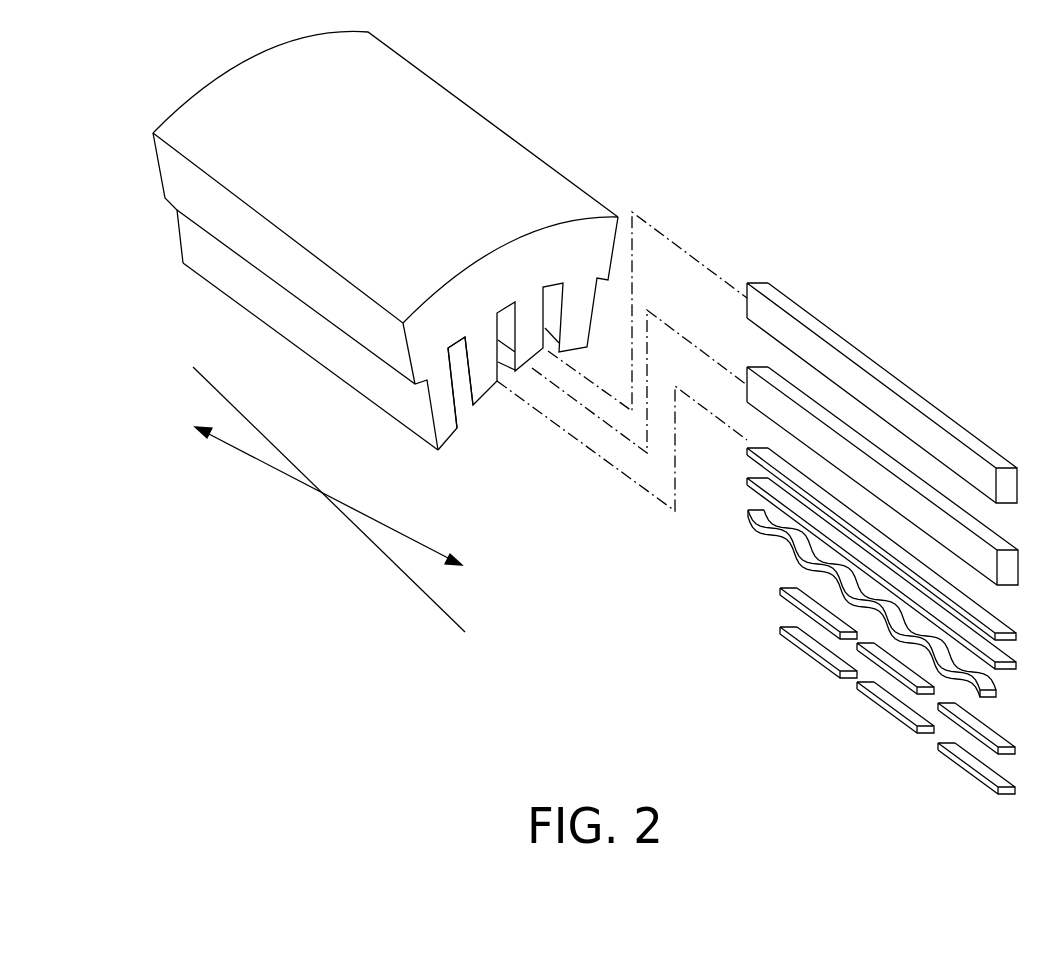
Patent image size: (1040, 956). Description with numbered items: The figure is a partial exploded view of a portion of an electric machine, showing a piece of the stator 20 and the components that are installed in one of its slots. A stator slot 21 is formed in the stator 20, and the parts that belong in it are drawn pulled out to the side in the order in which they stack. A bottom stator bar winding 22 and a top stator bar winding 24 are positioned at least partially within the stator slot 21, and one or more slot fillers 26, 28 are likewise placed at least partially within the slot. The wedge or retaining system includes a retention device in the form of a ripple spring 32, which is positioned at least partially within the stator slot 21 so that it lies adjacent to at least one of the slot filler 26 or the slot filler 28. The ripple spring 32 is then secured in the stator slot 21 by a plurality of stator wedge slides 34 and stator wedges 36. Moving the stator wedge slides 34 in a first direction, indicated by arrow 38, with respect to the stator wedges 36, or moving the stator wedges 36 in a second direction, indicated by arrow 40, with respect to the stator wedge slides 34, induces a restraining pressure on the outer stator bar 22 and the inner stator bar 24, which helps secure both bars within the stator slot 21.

The stator 20 is at (498, 103).
The stator slot 21 is at (458, 393).
The bottom stator bar winding 22 is at (770, 298).
The top stator bar winding 24 is at (767, 368).
The slot filler 26 is at (768, 446).
The slot filler 28 is at (767, 480).
The ripple spring 32 is at (758, 520).
The stator wedge slide 34 is at (798, 590).
The stator wedge 36 is at (797, 627).
The arrow 38 is at (372, 563).
The arrow 40 is at (433, 545).